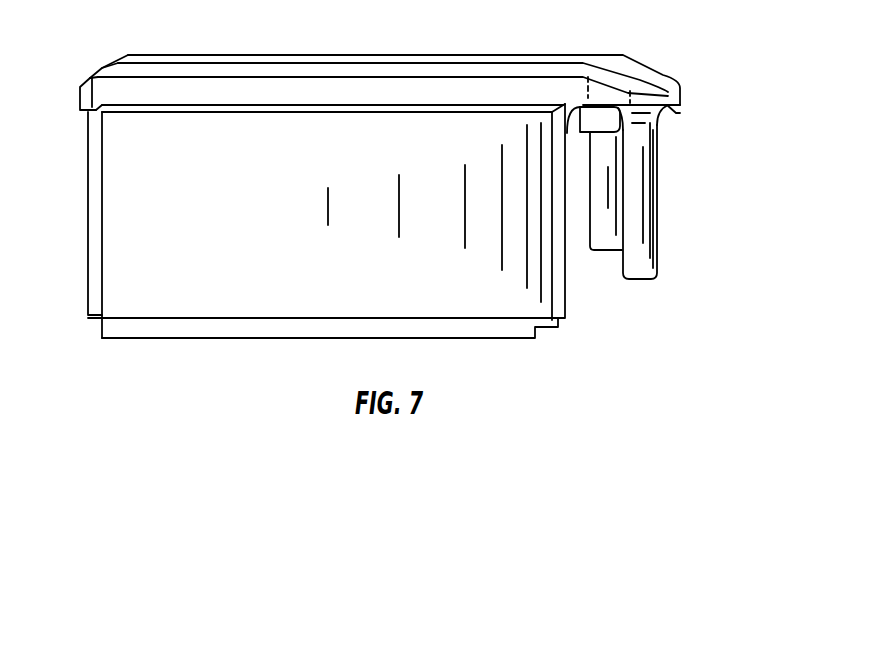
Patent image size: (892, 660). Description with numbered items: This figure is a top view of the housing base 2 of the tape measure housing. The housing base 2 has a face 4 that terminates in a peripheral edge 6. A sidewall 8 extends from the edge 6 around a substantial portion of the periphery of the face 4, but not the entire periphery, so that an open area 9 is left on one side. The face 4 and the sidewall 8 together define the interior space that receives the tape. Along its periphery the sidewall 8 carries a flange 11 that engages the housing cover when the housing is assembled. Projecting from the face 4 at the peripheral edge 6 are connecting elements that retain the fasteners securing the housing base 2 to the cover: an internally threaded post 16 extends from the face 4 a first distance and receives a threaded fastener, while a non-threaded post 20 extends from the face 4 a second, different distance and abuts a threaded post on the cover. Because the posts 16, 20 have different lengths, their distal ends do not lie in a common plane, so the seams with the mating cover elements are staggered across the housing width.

The housing base 2 is at (692, 93).
The face 4 is at (175, 54).
The peripheral edge 6 is at (673, 108).
The sidewall 8 is at (100, 317).
The open area 9 is at (693, 160).
The flange 11 is at (150, 332).
The internally threaded post 16 is at (647, 215).
The non-threaded post 20 is at (607, 255).